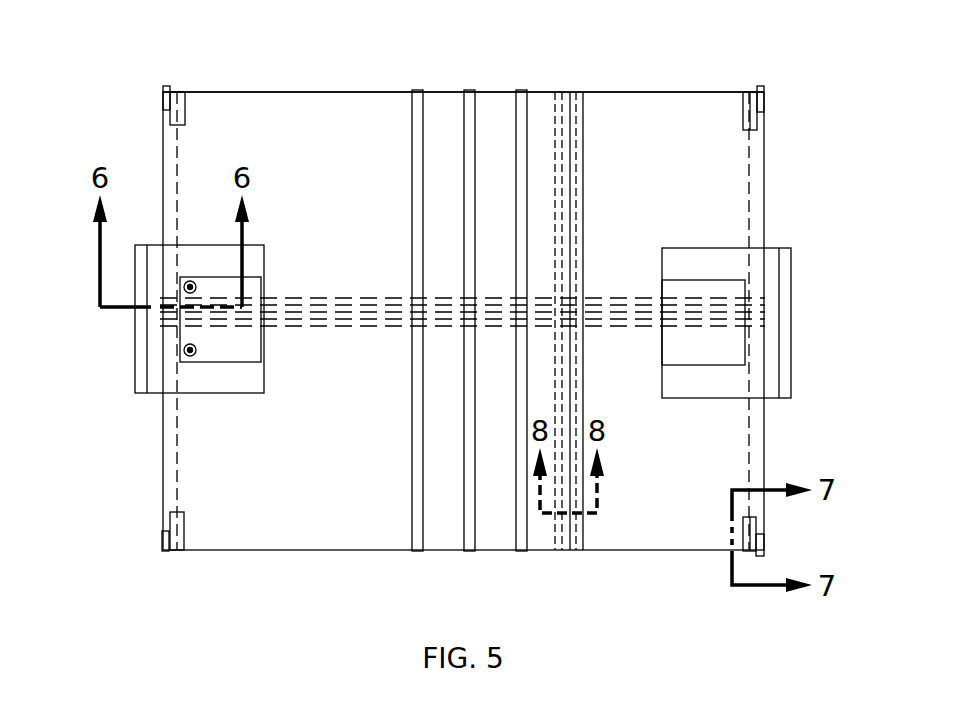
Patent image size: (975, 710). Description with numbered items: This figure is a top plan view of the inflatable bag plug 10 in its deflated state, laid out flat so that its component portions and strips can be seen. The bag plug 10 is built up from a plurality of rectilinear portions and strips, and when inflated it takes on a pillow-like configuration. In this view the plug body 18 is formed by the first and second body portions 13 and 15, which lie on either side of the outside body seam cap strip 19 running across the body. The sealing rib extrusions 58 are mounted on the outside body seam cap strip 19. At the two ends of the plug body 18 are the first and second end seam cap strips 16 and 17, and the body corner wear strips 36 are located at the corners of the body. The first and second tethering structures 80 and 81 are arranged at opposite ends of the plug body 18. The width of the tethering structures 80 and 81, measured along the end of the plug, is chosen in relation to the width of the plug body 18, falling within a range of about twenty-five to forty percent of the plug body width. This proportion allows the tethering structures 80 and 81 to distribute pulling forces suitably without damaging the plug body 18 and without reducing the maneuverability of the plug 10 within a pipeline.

The inflatable bag plug 10 is at (786, 155).
The first body portion 13 is at (691, 481).
The second body portion 15 is at (268, 478).
The first end seam cap strip 16 is at (743, 112).
The second end seam cap strip 17 is at (177, 529).
The plug body 18 is at (335, 112).
The outside body seam cap strip 19 is at (580, 128).
The body corner wear strip 36 is at (758, 104).
The sealing rib extrusion 58 is at (423, 122).
The first tethering structure 80 is at (786, 232).
The second tethering structure 81 is at (148, 415).